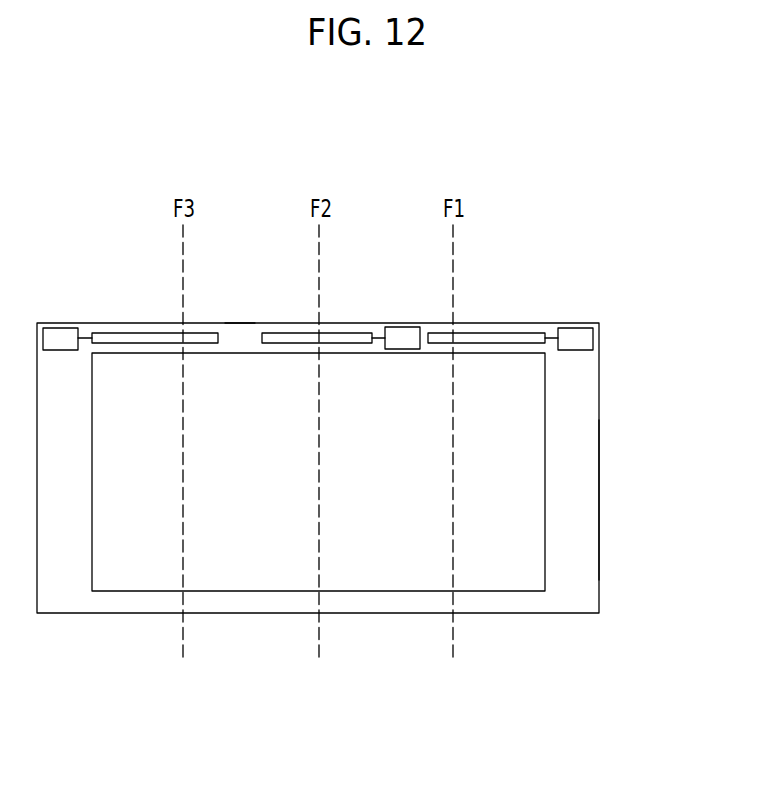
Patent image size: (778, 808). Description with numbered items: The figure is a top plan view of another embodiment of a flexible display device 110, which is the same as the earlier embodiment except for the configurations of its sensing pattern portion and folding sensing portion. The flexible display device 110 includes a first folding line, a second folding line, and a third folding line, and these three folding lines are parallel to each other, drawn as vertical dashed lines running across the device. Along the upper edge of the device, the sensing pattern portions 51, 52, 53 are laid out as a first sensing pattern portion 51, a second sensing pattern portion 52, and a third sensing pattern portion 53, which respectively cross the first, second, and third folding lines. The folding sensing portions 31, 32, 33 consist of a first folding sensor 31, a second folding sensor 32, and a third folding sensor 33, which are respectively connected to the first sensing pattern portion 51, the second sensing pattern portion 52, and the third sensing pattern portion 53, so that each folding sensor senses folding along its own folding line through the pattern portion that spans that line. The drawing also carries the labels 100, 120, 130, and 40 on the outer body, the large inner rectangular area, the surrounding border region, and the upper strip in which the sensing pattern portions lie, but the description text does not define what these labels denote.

The electronic device 100 is at (620, 342).
The flexible display device 110 is at (107, 619).
The display 120 is at (392, 591).
The frame (bezel) 130 is at (583, 531).
The ground plane / antenna carrier 40 is at (248, 331).
The first folding sensor 31 is at (581, 316).
The second folding sensor 32 is at (402, 316).
The third folding sensor 33 is at (58, 316).
The first sensing pattern portion 51 is at (500, 316).
The second sensing pattern portion 52 is at (352, 316).
The third sensing pattern portion 53 is at (130, 316).